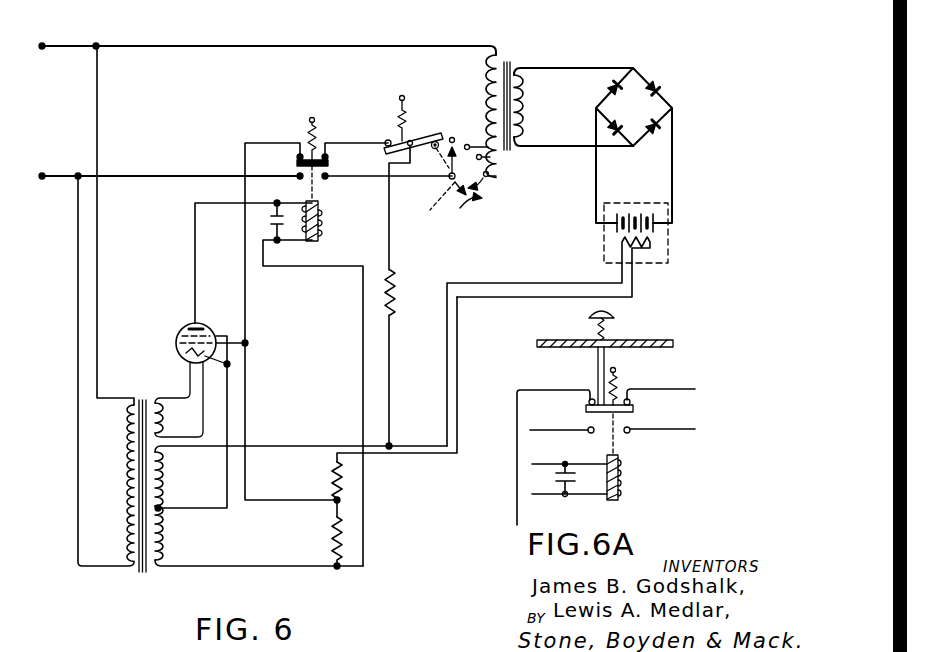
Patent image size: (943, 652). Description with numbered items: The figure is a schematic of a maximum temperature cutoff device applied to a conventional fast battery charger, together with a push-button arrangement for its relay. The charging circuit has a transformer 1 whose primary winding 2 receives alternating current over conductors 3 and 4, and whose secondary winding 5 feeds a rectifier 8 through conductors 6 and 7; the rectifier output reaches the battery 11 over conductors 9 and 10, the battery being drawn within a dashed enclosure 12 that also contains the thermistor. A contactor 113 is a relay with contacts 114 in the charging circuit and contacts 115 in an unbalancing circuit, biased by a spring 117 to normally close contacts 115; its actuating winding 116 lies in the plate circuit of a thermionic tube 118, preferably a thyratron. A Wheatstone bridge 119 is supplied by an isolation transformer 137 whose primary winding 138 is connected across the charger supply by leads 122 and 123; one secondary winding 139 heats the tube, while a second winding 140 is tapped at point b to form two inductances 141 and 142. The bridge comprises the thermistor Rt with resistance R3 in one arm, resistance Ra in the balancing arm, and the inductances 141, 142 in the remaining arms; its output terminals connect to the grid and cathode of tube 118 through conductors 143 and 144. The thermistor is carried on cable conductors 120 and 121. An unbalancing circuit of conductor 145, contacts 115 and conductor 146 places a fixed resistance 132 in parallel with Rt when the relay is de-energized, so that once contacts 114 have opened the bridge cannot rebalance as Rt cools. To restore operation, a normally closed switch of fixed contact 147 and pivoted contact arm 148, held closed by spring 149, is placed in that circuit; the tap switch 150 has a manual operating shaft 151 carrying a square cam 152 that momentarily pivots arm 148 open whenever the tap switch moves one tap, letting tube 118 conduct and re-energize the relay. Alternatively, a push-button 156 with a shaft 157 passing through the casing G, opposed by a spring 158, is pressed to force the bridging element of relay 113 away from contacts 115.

In FIG. 6, the transformer 1 is at (511, 63).
In FIG. 6, the primary winding 2 is at (486, 109).
In FIG. 6, the conductor 3 is at (355, 46).
In FIG. 6, the conductor 4 is at (410, 174).
In FIG. 6, the secondary winding 5 is at (528, 108).
In FIG. 6, the conductor 6 is at (565, 68).
In FIG. 6, the conductor 7 is at (546, 146).
In FIG. 6, the rectifier 8 is at (634, 107).
In FIG. 6, the conductor 9 is at (596, 166).
In FIG. 6, the conductor 10 is at (672, 170).
In FIG. 6, the battery 11 is at (628, 213).
In FIG. 6, the battery unit 12 is at (668, 248).
In FIG. 6, the contactor 113 is at (330, 167).
In FIG. 6A, the contactor 113 is at (637, 441).
In FIG. 6, the contacts 114 is at (298, 178).
In FIG. 6A, the contacts 114 is at (589, 434).
In FIG. 6, the contacts 115 is at (297, 157).
In FIG. 6A, the contacts 115 is at (589, 404).
In FIG. 6, the actuating winding 116 is at (320, 223).
In FIG. 6A, the actuating winding 116 is at (621, 492).
In FIG. 6, the spring 117 is at (316, 131).
In FIG. 6A, the spring 117 is at (618, 387).
In FIG. 6, the thermionic tube 118 is at (170, 346).
In FIG. 6, the Wheatstone bridge 119 is at (242, 522).
In FIG. 6, the conductor 120 is at (417, 434).
In FIG. 6, the conductor 121 is at (437, 450).
In FIG. 6, the conductor 122 is at (100, 258).
In FIG. 6, the conductor 123 is at (78, 333).
In FIG. 6, the fixed resistance 132 is at (392, 287).
In FIG. 6, the isolation transformer 137 is at (150, 577).
In FIG. 6, the primary winding 138 is at (128, 541).
In FIG. 6, the winding 139 is at (164, 416).
In FIG. 6, the winding 140 is at (172, 557).
In FIG. 6, the inductance 141 is at (164, 484).
In FIG. 6, the inductance 142 is at (164, 545).
In FIG. 6, the conductor 143 is at (246, 391).
In FIG. 6, the conductor 144 is at (228, 426).
In FIG. 6, the conductor 145 is at (246, 297).
In FIG. 6, the conductor 146 is at (391, 373).
In FIG. 6, the fixed contact 147 is at (386, 143).
In FIG. 6, the pivoted contact arm 148 is at (408, 139).
In FIG. 6, the spring 149 is at (400, 121).
In FIG. 6, the tap switch 150 is at (493, 170).
In FIG. 6, the manual operating shaft 151 is at (447, 196).
In FIG. 6, the cam 152 is at (437, 142).
In FIG. 6A, the push-button 156 is at (616, 312).
In FIG. 6A, the shaft 157 is at (598, 369).
In FIG. 6A, the spring 158 is at (600, 338).
In FIG. 6A, the casing G is at (672, 340).
In FIG. 6, the thermistor Rt is at (640, 252).
In FIG. 6, the resistance R3 is at (330, 483).
In FIG. 6, the resistance Ra is at (330, 551).